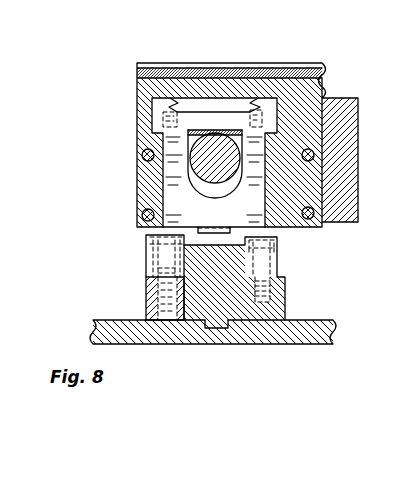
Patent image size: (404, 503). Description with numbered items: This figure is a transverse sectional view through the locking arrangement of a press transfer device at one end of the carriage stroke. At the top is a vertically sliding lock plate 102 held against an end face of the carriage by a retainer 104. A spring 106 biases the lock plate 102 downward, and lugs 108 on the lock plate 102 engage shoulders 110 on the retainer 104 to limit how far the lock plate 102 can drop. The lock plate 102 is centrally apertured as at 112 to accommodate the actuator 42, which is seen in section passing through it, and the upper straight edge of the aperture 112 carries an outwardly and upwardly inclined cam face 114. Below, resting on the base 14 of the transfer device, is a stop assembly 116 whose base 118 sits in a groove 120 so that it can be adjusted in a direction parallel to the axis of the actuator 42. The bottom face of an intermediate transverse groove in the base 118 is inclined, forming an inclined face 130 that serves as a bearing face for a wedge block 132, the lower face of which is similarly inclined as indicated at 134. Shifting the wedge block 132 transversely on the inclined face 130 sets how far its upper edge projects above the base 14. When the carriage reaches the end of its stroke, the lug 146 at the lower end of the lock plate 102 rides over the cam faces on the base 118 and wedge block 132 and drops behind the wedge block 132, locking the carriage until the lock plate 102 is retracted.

The base 14 is at (318, 342).
The actuator 42 is at (228, 168).
The sliding lock plate 102 is at (172, 189).
The retainer 104 is at (297, 84).
The spring 106 is at (252, 102).
The lug 108 is at (152, 120).
The shoulder 110 is at (156, 140).
The aperture 112 is at (224, 193).
The cam face 114 is at (203, 133).
The stop assembly 116 is at (285, 293).
The base 118 is at (146, 297).
The groove 120 is at (240, 330).
The inclined face 130 is at (266, 278).
The wedge block 132 is at (278, 245).
The inclined lower face 134 is at (146, 268).
The lug 146 is at (221, 228).